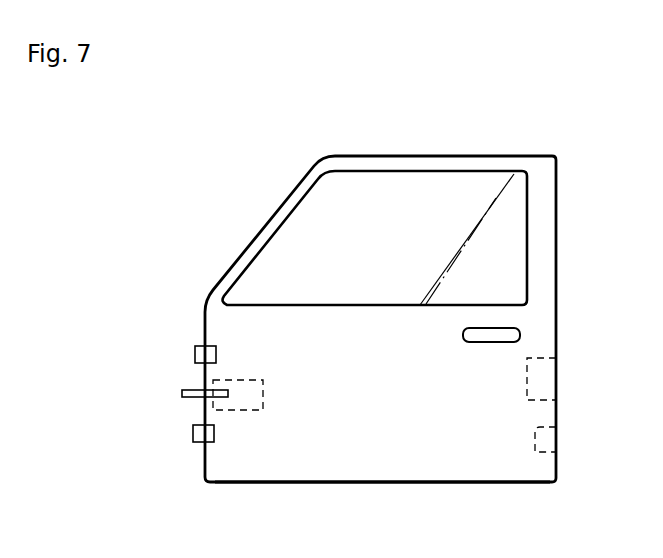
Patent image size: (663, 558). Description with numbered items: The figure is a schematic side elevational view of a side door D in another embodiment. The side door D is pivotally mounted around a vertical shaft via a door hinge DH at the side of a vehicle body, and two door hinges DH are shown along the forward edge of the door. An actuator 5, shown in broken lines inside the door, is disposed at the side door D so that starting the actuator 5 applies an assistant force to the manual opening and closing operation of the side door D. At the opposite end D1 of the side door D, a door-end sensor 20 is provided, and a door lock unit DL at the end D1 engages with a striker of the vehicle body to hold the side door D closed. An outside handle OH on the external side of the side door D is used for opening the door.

The side door D is at (468, 154).
The outside handle OH is at (492, 328).
The door lock unit DL is at (537, 358).
The door-end sensor 20 is at (540, 427).
The end of side door D1 is at (556, 462).
The door hinge DH is at (195, 355).
The actuator 5 is at (248, 410).